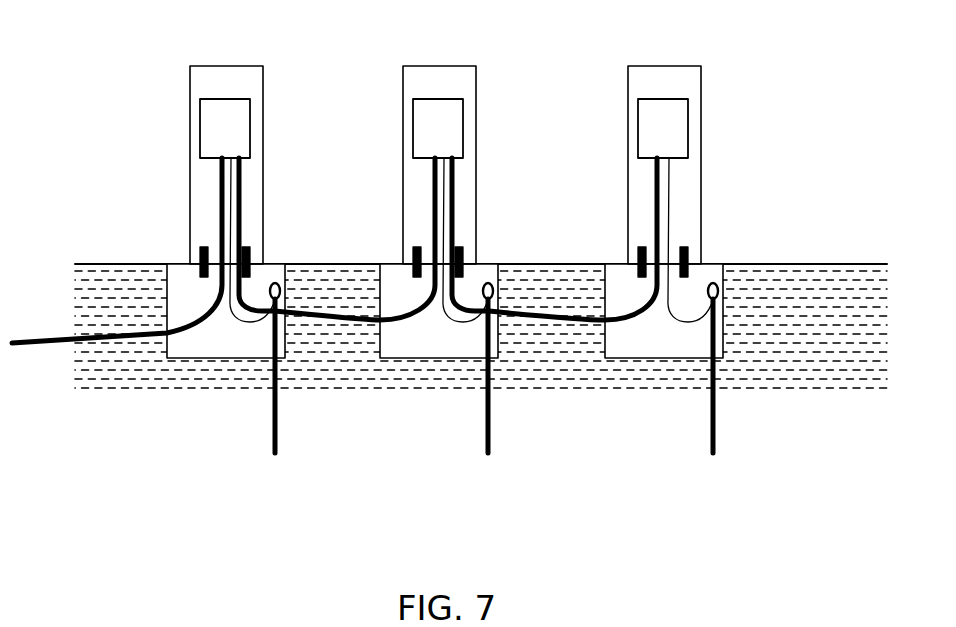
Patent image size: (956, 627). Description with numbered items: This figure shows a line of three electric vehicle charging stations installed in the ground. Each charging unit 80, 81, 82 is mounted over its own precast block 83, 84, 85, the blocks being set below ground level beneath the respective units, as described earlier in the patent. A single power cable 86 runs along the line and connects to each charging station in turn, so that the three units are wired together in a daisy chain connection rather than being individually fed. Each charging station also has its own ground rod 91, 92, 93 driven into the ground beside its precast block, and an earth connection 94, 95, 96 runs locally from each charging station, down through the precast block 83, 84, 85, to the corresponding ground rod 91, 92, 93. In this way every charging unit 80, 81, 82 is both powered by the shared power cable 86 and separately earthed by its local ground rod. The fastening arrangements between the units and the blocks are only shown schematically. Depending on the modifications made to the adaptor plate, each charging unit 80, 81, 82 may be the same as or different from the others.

The charging unit 80 is at (190, 110).
The charging unit 81 is at (403, 110).
The charging unit 82 is at (628, 110).
The precast block 83 is at (187, 358).
The precast block 84 is at (400, 358).
The precast block 85 is at (613, 358).
The power cable 86 is at (47, 345).
The ground rod 91 is at (273, 398).
The ground rod 92 is at (486, 394).
The ground rod 93 is at (709, 396).
The earth connection 94 is at (245, 322).
The earth connection 95 is at (458, 322).
The earth connection 96 is at (677, 322).